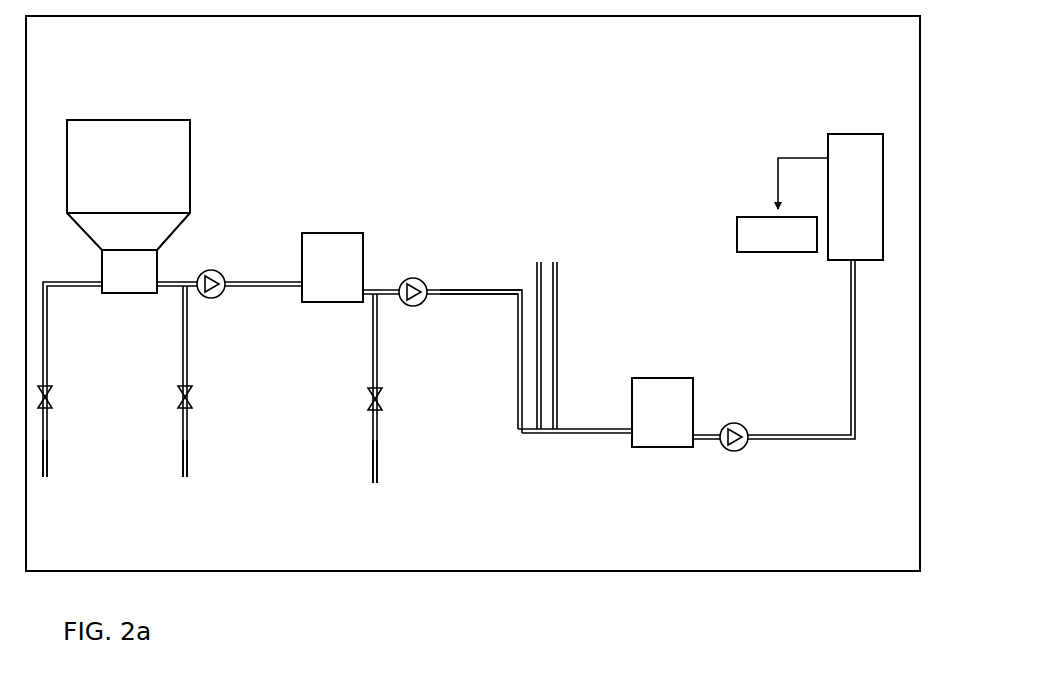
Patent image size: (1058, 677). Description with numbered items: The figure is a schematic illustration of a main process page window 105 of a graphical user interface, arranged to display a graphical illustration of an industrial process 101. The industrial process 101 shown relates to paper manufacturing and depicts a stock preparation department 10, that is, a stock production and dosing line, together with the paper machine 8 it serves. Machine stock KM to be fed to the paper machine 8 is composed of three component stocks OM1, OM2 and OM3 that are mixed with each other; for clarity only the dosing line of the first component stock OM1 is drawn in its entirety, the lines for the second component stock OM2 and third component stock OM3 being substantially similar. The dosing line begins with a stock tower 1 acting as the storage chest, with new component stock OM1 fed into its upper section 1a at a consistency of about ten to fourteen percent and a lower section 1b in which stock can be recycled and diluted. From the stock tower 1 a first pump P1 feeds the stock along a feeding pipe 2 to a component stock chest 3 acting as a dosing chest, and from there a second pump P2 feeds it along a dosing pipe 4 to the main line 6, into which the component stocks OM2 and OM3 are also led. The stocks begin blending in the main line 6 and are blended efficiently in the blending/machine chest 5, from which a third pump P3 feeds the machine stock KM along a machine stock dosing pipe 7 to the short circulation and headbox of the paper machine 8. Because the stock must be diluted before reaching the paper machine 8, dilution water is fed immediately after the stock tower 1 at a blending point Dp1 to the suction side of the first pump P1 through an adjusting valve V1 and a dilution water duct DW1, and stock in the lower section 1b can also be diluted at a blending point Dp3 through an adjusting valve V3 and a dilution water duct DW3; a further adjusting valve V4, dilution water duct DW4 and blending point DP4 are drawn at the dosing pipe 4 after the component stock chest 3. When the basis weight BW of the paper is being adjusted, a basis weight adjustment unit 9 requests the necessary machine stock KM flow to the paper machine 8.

The stock tower 1 is at (108, 108).
The upper section of the stock tower 1a is at (146, 186).
The lower section of the stock tower 1b is at (147, 287).
The feeding pipe 2 is at (245, 282).
The component stock chest 3 is at (341, 280).
The dosing pipe 4 is at (519, 360).
The blending/machine chest 5 is at (671, 426).
The main line 6 is at (572, 436).
The machine stock dosing pipe 7 is at (840, 439).
The paper machine 8 is at (864, 210).
The basis weight adjustment unit 9 is at (786, 250).
The stock preparation department 10 is at (443, 197).
The industrial process 101 is at (312, 118).
The main process page window 105 is at (878, 87).
The first pump P1 is at (206, 271).
The second pump P2 is at (410, 280).
The third pump P3 is at (733, 423).
The adjusting valve V1 is at (182, 392).
The adjusting valve V3 is at (51, 405).
The valve V4 is at (372, 392).
The dilution water duct DW1 is at (187, 474).
The dilution water duct DW3 is at (47, 472).
The water supply DW4 is at (378, 478).
The blending point Dp1 is at (180, 288).
The blending point Dp3 is at (97, 278).
The dosing point DP4 is at (369, 300).
The first component stock OM1 is at (511, 288).
The second component stock OM2 is at (542, 258).
The third component stock OM3 is at (559, 258).
The machine stock KM is at (778, 446).
The basis weight BW is at (792, 158).